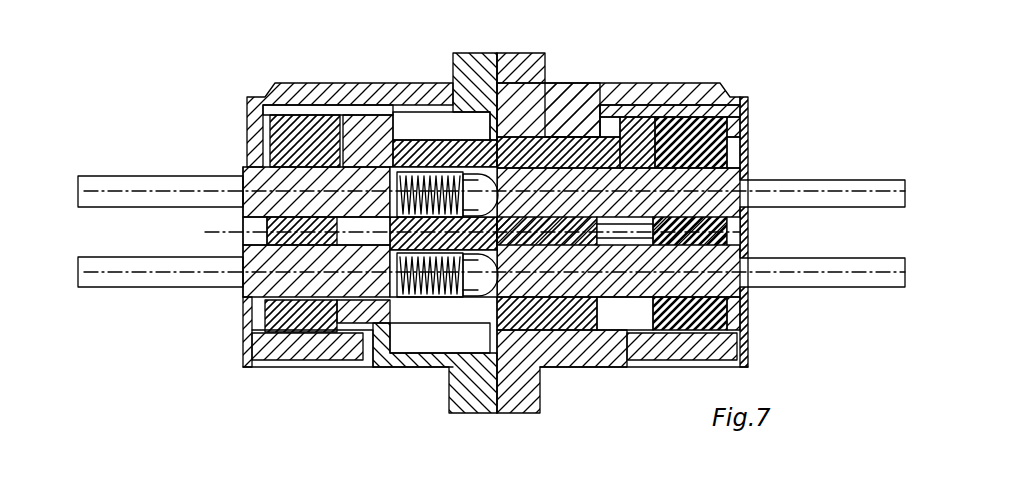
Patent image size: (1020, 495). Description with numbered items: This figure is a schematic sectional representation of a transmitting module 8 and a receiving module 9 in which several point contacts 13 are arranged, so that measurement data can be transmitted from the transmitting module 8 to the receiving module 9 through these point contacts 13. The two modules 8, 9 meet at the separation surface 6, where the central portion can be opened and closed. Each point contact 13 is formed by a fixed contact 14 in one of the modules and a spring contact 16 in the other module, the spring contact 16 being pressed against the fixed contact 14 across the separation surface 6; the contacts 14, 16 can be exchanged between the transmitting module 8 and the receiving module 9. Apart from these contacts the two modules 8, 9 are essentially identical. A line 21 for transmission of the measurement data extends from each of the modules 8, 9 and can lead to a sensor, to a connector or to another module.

The separation surface 6 is at (500, 105).
The transmitting module 8 is at (361, 72).
The receiving module 9 is at (684, 72).
The point contacts 13 is at (525, 168).
The fixed contact 14 is at (500, 283).
The spring contact 16 is at (465, 185).
The line 21 is at (160, 287).